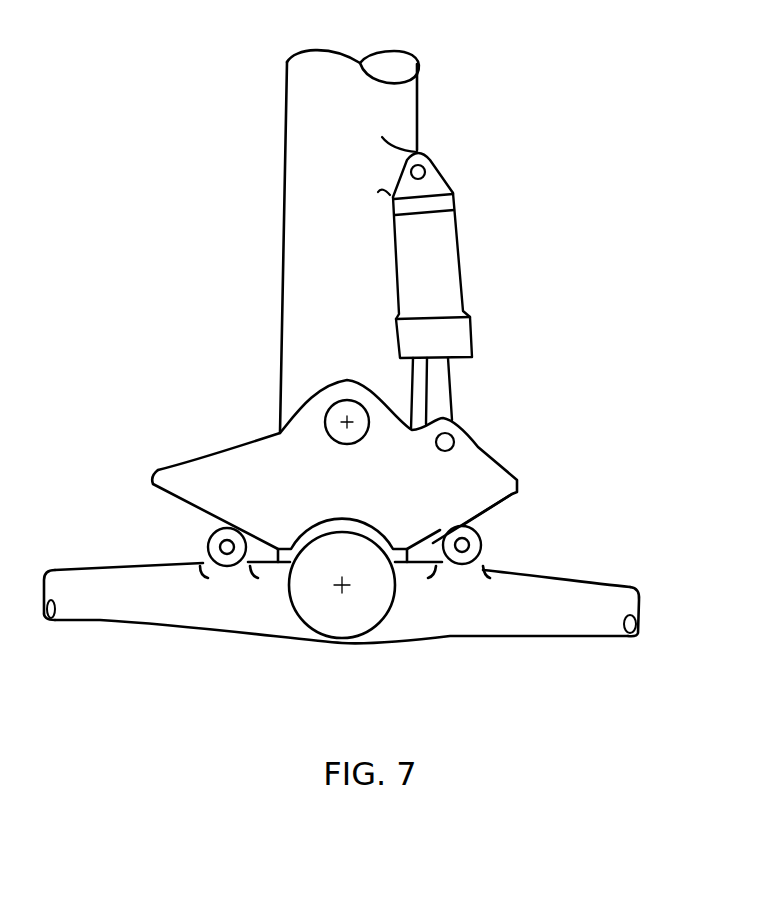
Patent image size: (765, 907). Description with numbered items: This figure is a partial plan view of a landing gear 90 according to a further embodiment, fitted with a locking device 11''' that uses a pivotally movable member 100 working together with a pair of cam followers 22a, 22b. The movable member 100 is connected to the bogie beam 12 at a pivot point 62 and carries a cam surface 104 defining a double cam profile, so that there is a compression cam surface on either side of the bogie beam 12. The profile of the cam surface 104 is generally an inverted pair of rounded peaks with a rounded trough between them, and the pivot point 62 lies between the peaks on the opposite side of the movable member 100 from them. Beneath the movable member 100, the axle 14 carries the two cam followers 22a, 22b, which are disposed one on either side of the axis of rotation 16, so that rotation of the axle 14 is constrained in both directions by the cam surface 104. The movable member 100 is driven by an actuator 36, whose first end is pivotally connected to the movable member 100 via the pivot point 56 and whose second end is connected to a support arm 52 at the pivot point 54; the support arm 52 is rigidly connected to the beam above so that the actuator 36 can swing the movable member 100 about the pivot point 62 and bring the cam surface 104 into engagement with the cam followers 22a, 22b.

The bogie beam 12 is at (402, 95).
The support arm 52 is at (400, 142).
The pivot point 54 is at (426, 170).
The actuator 36 is at (463, 273).
The pivot point 56 is at (455, 440).
The pivot point 62 is at (326, 416).
The movable member 100 is at (190, 473).
The cam surface 104 is at (500, 500).
The cam follower 22a is at (207, 540).
The cam follower 22b is at (483, 540).
The axis of rotation 16 is at (343, 615).
The axle 14 is at (498, 620).
The landing gear 90 is at (560, 87).
The locking device 11''' is at (649, 344).